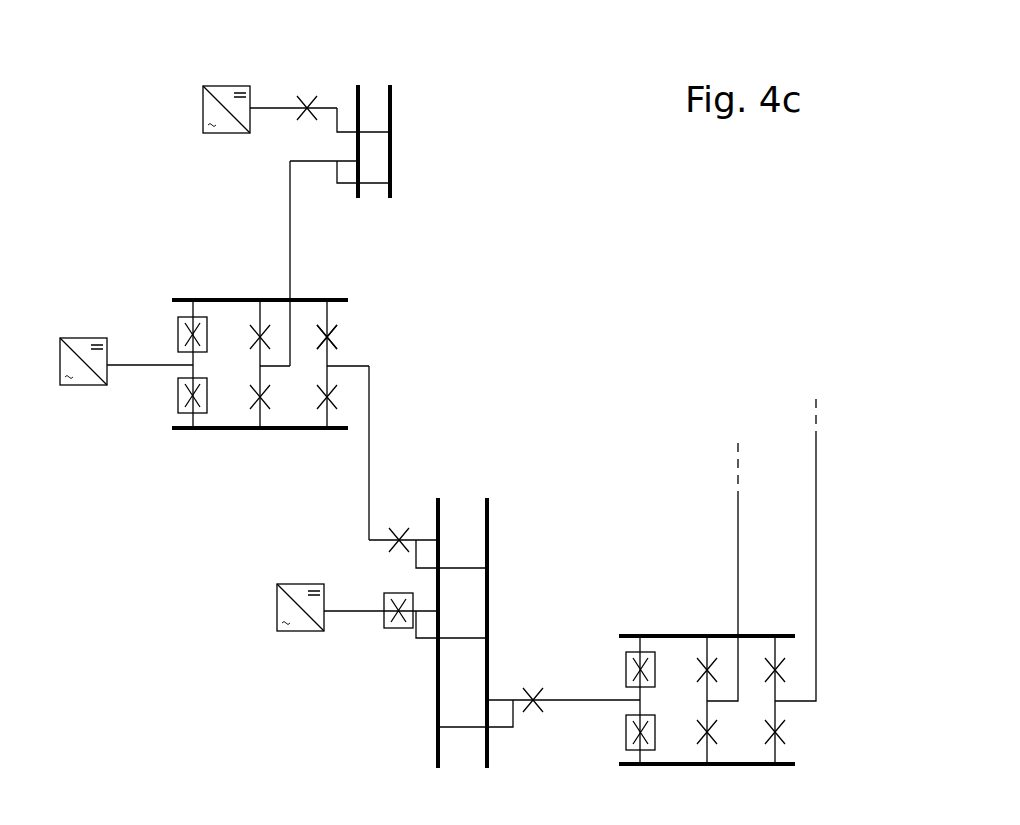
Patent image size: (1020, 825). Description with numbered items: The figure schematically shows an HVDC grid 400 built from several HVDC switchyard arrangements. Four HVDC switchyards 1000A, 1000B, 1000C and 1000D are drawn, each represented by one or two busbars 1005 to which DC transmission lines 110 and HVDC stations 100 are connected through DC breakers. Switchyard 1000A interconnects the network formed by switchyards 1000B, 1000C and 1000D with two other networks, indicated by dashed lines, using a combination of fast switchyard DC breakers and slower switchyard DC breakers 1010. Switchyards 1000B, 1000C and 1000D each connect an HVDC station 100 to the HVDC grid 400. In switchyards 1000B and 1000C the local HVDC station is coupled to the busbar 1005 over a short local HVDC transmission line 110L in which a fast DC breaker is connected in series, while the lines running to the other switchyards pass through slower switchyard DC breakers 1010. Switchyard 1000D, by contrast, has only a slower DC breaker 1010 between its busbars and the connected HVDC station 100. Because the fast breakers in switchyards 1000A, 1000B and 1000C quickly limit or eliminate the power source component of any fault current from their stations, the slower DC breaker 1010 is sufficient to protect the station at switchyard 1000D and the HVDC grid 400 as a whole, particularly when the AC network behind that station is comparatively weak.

The HVDC grid 400 is at (320, 762).
The HVDC station 100 is at (292, 633).
The DC transmission line 110 is at (372, 432).
The local HVDC transmission line 110L is at (132, 366).
The HVDC switchyard 1000A is at (632, 615).
The HVDC switchyard 1000B is at (520, 528).
The HVDC switchyard 1000C is at (340, 270).
The HVDC switchyard 1000D is at (428, 135).
The busbar 1005 is at (213, 297).
The switchyard DC breaker 1010 is at (336, 331).